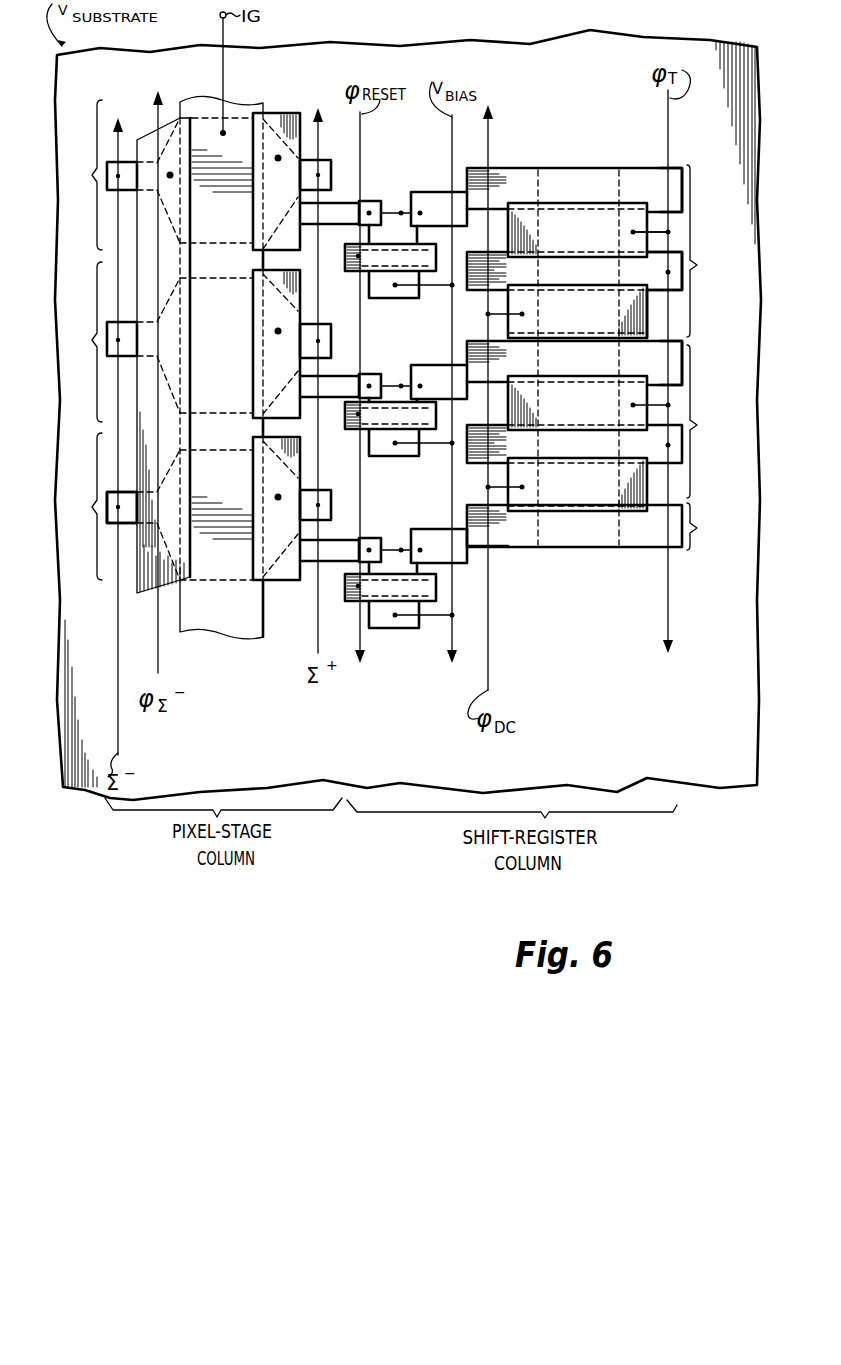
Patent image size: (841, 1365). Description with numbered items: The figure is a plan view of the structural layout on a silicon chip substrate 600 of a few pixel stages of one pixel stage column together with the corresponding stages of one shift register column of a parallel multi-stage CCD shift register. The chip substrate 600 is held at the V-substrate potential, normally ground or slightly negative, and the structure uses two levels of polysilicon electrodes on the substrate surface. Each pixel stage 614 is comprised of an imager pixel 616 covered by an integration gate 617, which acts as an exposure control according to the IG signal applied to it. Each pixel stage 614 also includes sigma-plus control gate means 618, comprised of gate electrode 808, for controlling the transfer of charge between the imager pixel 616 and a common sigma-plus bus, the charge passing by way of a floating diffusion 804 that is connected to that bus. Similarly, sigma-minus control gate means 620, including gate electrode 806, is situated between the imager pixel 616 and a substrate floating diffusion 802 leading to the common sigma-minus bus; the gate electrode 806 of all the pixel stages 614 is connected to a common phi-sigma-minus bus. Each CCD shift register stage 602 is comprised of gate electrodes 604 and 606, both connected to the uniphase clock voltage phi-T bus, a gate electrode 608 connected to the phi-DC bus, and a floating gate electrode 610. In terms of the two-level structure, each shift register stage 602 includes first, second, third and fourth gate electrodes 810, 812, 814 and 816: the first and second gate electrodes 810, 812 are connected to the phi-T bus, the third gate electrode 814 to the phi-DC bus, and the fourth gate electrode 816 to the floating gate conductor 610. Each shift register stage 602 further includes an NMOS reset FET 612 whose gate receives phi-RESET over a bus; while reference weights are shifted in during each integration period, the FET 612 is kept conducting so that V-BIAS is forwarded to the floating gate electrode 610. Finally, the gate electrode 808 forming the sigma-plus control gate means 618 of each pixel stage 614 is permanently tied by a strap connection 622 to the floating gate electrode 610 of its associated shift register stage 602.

The chip substrate 600 is at (78, 787).
The CCD shift register stage 602 is at (711, 357).
The gate electrode 604 is at (589, 316).
The gate electrode 606 is at (574, 357).
The gate electrode 608 is at (567, 398).
The floating gate electrode 610 is at (574, 357).
The NMOS reset FET 612 is at (385, 640).
The pixel stage 614 is at (121, 340).
The imager pixel 616 is at (245, 245).
The integration gate 617 is at (262, 637).
The sigma-plus control gate means 618 is at (327, 445).
The sigma-minus control gate means 620 is at (170, 178).
The strap connection 622 is at (396, 548).
The floating diffusion 802 is at (108, 523).
The floating diffusion 804 is at (333, 508).
The gate electrode 806 is at (157, 373).
The gate electrode 808 is at (265, 113).
The first gate electrode 810 is at (640, 222).
The second gate electrode 812 is at (677, 256).
The third gate electrode 814 is at (642, 316).
The fourth gate electrode 816 is at (684, 358).